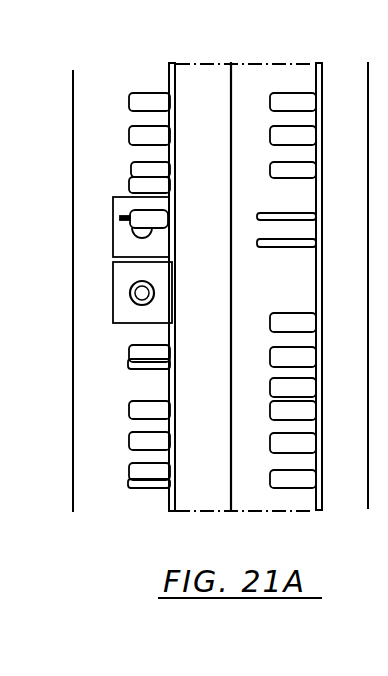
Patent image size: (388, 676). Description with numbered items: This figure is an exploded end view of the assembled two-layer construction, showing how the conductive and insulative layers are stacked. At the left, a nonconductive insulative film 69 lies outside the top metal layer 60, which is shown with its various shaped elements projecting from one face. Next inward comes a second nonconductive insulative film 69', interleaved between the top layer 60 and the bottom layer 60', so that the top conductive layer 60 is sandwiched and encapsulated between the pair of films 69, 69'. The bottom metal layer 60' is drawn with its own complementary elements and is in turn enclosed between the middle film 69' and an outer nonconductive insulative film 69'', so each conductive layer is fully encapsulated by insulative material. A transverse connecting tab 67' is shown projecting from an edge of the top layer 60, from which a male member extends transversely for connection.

The nonconductive insulative film 69 is at (102, 282).
The top layer 60 is at (221, 270).
The nonconductive insulative film 69' is at (265, 268).
The bottom layer 60' is at (312, 286).
The nonconductive insulative film 69'' is at (345, 267).
The transverse connecting tab 67' is at (126, 281).